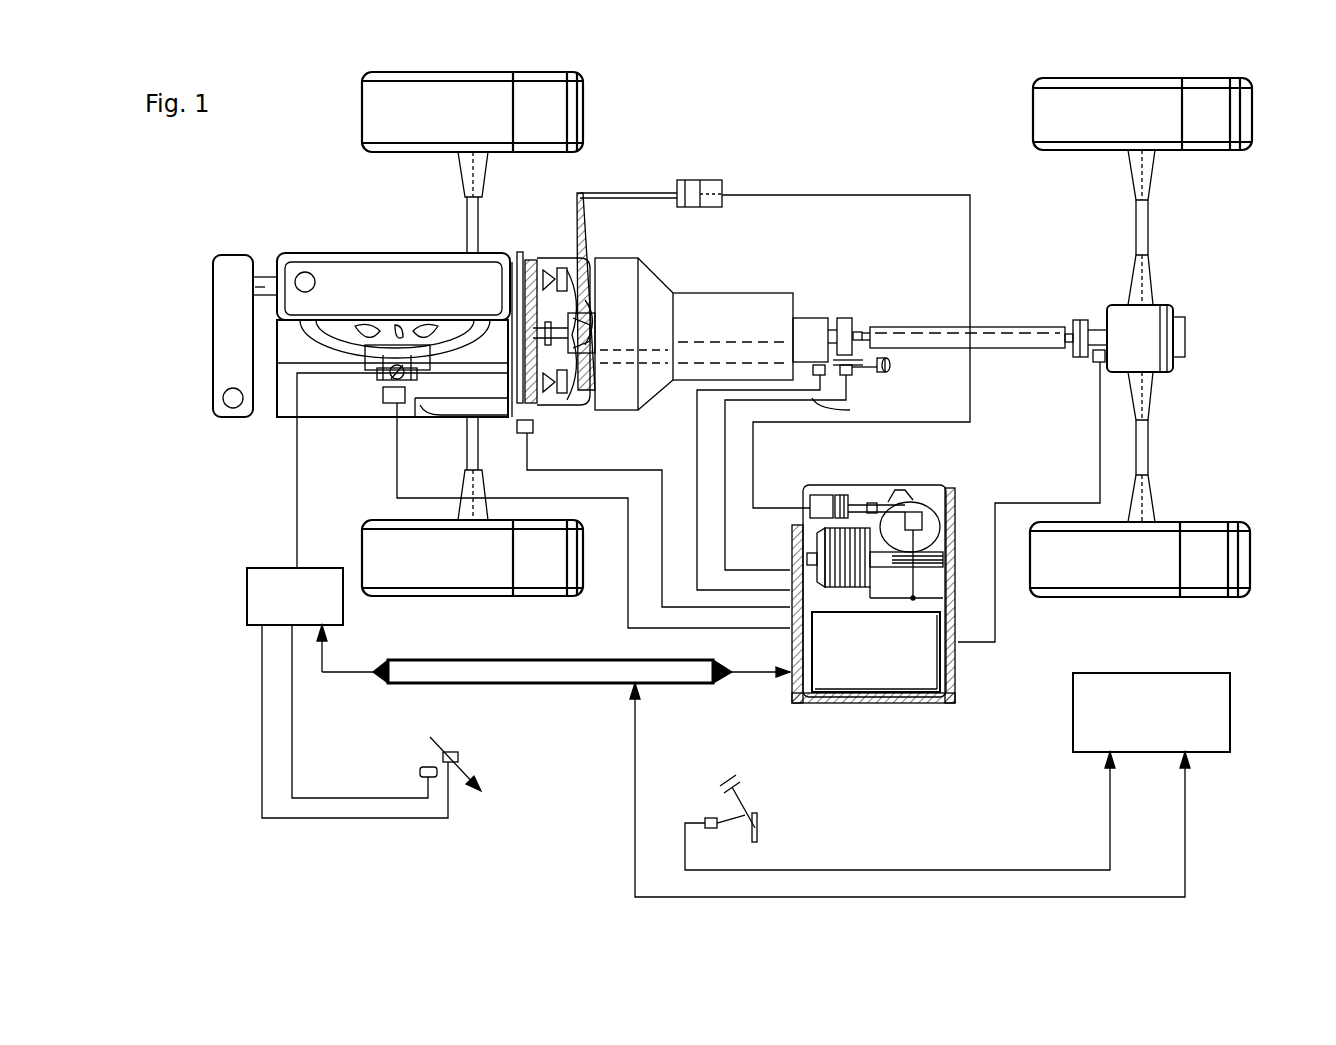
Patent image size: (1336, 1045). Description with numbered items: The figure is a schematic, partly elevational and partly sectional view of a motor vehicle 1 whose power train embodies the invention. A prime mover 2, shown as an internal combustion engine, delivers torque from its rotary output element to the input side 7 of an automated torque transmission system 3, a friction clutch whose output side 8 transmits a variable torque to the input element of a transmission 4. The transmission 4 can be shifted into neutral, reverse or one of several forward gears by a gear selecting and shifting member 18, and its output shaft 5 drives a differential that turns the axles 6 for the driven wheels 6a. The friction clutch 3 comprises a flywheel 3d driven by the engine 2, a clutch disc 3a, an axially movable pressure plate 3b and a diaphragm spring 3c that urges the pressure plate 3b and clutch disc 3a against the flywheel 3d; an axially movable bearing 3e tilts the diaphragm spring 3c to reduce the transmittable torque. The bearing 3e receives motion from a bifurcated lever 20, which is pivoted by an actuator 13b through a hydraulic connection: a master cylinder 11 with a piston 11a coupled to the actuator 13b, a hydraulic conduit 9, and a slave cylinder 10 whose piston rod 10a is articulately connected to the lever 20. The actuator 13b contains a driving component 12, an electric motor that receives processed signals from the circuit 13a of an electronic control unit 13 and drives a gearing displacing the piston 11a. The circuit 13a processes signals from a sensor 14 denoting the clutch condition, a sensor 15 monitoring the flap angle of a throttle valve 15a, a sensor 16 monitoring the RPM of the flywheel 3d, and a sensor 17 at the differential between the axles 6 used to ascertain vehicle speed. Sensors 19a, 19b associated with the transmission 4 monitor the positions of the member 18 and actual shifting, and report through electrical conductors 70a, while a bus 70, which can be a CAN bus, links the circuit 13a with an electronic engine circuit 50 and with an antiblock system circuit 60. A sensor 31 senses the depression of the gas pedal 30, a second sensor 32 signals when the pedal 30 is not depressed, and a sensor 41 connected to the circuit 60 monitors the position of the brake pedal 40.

The motor vehicle 1 is at (850, 86).
The prime mover 2 is at (335, 275).
The automated torque transmission system 3 is at (543, 266).
The clutch disc 3a is at (576, 405).
The pressure plate 3b is at (565, 290).
The diaphragm spring 3c is at (572, 298).
The flywheel 3d is at (540, 410).
The axially movable bearing 3e is at (595, 340).
The transmission 4 is at (750, 349).
The output shaft 5 is at (1018, 333).
The axles 6 is at (1148, 452).
The driven wheels 6a is at (1222, 118).
The input side 7 is at (515, 262).
The output side 8 is at (600, 278).
The hydraulic conduit 9 is at (790, 194).
The slave cylinder 10 is at (706, 190).
The piston rod 10a is at (632, 190).
The hydraulic master cylinder 11 is at (822, 505).
The piston 11a is at (843, 500).
The driving component 12 is at (820, 540).
The electronic control unit 13 is at (790, 690).
The circuit 13a is at (890, 664).
The actuator 13b is at (928, 482).
The sensor 14 is at (920, 516).
The sensor 15 is at (385, 396).
The throttle valve 15a is at (394, 353).
The sensor 16 is at (520, 430).
The sensor 17 is at (1093, 366).
The gear selecting and shifting member 18 is at (850, 330).
The sensor 19a is at (820, 362).
The sensor 19b is at (856, 374).
The bifurcated lever 20 is at (584, 228).
The gas pedal 30 is at (440, 748).
The sensor 31 is at (425, 765).
The second sensor 32 is at (460, 757).
The brake pedal 40 is at (760, 835).
The sensor 41 is at (710, 817).
The electronic engine circuit 50 is at (310, 612).
The antiblock system circuit 60 is at (1166, 725).
The bus 70 is at (585, 672).
The electrical conductors 70a is at (856, 407).